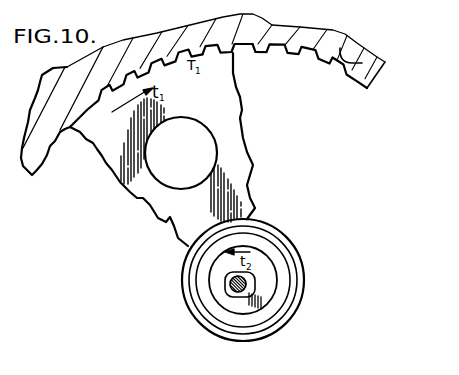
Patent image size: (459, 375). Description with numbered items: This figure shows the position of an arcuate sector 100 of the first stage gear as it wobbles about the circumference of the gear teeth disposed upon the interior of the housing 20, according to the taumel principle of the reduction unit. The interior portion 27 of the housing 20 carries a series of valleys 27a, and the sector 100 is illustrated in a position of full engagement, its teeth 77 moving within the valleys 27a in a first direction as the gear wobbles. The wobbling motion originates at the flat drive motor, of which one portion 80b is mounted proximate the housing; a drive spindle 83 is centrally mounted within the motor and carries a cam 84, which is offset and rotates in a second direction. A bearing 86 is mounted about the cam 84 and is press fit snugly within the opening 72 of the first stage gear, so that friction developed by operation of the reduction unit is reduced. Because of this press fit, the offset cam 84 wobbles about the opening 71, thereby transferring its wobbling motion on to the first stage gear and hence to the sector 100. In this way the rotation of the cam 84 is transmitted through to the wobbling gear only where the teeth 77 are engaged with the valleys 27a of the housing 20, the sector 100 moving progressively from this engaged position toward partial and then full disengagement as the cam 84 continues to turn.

The housing 20 is at (318, 36).
The interior gear portion of housing 27 is at (362, 67).
The valleys 27a is at (354, 47).
The teeth 77 is at (210, 49).
The opening 71 is at (203, 143).
The arcuate sector 100 is at (178, 208).
The opening of first stage gear 72 is at (282, 231).
The bearing 86 is at (285, 256).
The drive spindle 83 is at (252, 281).
The motor portion 80b is at (270, 293).
The cam 84 is at (238, 306).